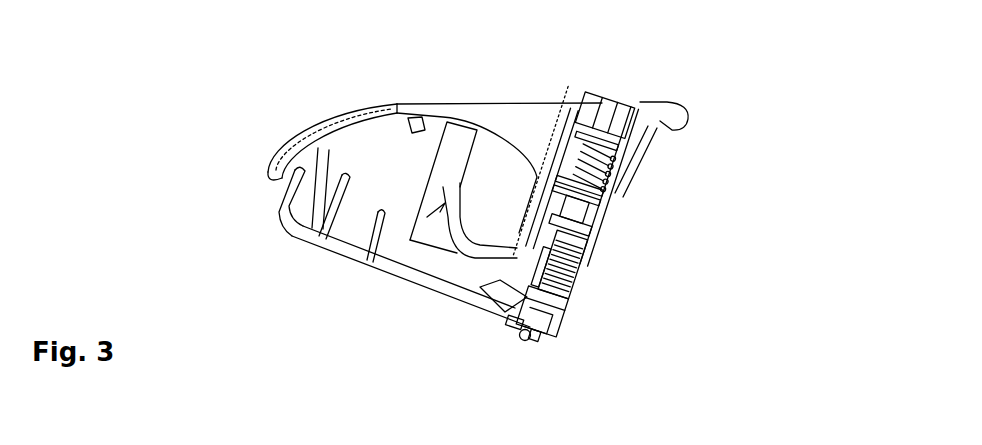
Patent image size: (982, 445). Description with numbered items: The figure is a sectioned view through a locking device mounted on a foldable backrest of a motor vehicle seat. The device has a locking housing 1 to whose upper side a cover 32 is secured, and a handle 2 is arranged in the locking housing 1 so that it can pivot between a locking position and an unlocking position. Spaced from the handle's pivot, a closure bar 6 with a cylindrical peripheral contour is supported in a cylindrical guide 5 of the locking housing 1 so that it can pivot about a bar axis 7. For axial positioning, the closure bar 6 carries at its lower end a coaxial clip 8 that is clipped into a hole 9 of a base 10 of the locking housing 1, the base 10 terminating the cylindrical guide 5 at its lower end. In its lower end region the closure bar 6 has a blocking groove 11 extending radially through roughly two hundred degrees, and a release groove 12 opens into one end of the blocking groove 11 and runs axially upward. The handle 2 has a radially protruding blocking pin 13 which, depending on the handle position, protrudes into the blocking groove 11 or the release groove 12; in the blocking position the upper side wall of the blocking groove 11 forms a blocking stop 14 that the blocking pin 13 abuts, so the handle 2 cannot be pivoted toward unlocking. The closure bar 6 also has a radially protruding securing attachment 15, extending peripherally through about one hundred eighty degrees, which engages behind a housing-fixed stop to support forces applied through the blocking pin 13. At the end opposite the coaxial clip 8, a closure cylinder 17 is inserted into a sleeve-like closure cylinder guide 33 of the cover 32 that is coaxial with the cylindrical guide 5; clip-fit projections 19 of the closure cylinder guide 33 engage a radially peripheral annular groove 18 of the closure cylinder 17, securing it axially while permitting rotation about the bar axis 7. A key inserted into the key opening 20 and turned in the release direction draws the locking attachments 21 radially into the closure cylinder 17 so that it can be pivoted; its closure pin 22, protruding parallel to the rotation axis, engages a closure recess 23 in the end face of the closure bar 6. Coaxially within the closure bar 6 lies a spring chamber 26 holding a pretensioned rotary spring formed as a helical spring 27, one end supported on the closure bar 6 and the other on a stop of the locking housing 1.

The locking housing 1 is at (316, 194).
The handle 2 is at (460, 197).
The cylindrical guide 5 is at (590, 233).
The closure bar 6 is at (552, 288).
The bar axis 7 is at (633, 95).
The coaxial clip 8 is at (523, 341).
The hole 9 is at (522, 327).
The base 10 is at (537, 335).
The blocking groove 11 is at (537, 316).
The release groove 12 is at (542, 270).
The blocking pin 13 is at (520, 310).
The blocking stop 14 is at (550, 298).
The securing attachment 15 is at (582, 251).
The closure cylinder 17 is at (632, 140).
The annular groove 18 is at (607, 195).
The clip-fit projections 19 is at (605, 205).
The key opening 20 is at (623, 112).
The locking attachments 21 is at (622, 153).
The closure pin 22 is at (593, 222).
The closure recess 23 is at (560, 193).
The spring chamber 26 is at (585, 256).
The helical spring 27 is at (555, 273).
The cover 32 is at (308, 123).
The closure cylinder guide 33 is at (597, 142).